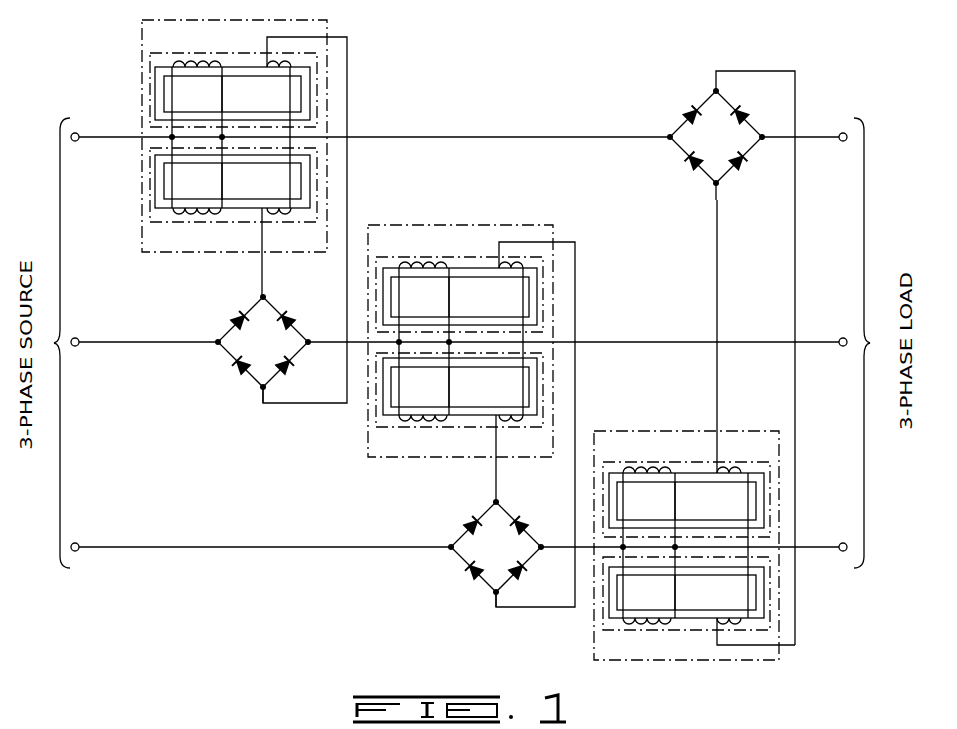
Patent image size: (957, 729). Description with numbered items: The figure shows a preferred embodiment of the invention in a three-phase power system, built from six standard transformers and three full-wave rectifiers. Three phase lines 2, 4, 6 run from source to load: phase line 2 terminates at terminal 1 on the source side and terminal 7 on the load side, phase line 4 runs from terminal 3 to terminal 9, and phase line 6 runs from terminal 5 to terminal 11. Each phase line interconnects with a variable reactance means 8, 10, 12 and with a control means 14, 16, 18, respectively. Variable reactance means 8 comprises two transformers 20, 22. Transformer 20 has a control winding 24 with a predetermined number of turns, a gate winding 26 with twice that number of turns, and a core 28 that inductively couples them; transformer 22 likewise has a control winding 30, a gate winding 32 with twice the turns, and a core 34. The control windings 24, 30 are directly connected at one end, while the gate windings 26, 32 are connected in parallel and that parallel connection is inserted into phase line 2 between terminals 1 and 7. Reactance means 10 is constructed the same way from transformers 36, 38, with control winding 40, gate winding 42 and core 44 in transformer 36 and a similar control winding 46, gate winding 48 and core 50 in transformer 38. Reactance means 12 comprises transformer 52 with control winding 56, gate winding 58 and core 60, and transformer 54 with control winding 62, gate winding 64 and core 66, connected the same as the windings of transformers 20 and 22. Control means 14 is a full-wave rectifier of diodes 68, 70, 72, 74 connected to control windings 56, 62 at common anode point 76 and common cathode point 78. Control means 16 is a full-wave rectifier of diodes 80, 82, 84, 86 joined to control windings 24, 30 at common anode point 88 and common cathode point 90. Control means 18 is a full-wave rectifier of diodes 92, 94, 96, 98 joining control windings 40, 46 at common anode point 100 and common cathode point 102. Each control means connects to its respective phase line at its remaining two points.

The terminal 1 is at (75, 148).
The terminal 3 is at (75, 353).
The terminal 5 is at (78, 538).
The terminal 7 is at (843, 148).
The terminal 9 is at (843, 353).
The terminal 11 is at (847, 536).
The phase line 2 is at (423, 139).
The phase line 4 is at (130, 344).
The phase line 6 is at (232, 549).
The variable reactance means 8 is at (142, 45).
The variable reactance means 10 is at (475, 206).
The variable reactance means 12 is at (600, 431).
The control means 14 is at (680, 175).
The control means 16 is at (240, 390).
The control means 18 is at (470, 595).
The transformer 20 is at (243, 52).
The transformer 22 is at (235, 226).
The control winding 24 is at (292, 63).
The gate winding 26 is at (193, 60).
The core 28 is at (227, 80).
The control winding 30 is at (282, 215).
The gate winding 32 is at (185, 215).
The core 34 is at (238, 198).
The transformer 36 is at (458, 256).
The transformer 38 is at (450, 432).
The control winding 40 is at (505, 262).
The gate winding 42 is at (413, 262).
The core 44 is at (468, 312).
The control winding 46 is at (505, 420).
The gate winding 48 is at (413, 420).
The core 50 is at (468, 400).
The transformer 52 is at (688, 460).
The transformer 54 is at (690, 633).
The control winding 56 is at (730, 468).
The gate winding 58 is at (637, 468).
The core 60 is at (683, 490).
The control winding 62 is at (740, 647).
The gate winding 64 is at (637, 625).
The core 66 is at (688, 605).
The diode 68 is at (686, 108).
The diode 70 is at (744, 108).
The diode 72 is at (742, 167).
The diode 74 is at (698, 155).
The common anode point 76 is at (718, 190).
The common cathode point 78 is at (713, 88).
The diode 80 is at (232, 312).
The diode 82 is at (283, 312).
The diode 84 is at (292, 366).
The diode 86 is at (246, 358).
The common anode point 88 is at (263, 395).
The common cathode point 90 is at (264, 294).
The diode 92 is at (468, 515).
The diode 94 is at (525, 520).
The diode 96 is at (528, 570).
The diode 98 is at (480, 566).
The common anode point 100 is at (496, 600).
The common cathode point 102 is at (497, 502).